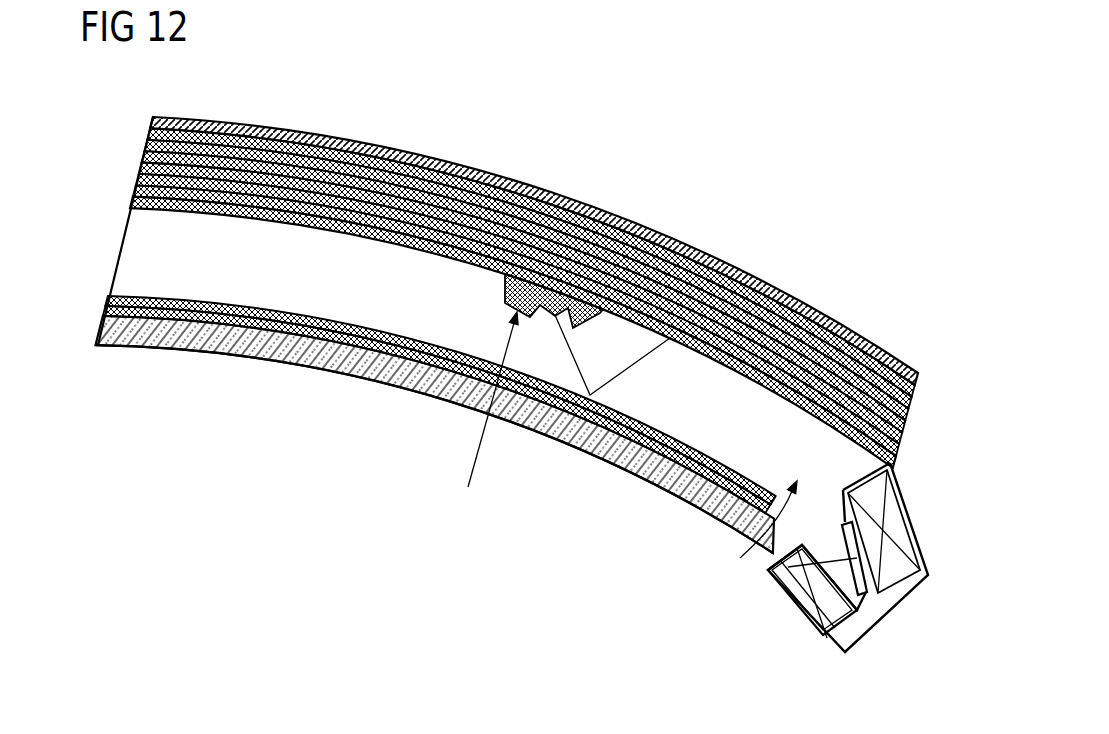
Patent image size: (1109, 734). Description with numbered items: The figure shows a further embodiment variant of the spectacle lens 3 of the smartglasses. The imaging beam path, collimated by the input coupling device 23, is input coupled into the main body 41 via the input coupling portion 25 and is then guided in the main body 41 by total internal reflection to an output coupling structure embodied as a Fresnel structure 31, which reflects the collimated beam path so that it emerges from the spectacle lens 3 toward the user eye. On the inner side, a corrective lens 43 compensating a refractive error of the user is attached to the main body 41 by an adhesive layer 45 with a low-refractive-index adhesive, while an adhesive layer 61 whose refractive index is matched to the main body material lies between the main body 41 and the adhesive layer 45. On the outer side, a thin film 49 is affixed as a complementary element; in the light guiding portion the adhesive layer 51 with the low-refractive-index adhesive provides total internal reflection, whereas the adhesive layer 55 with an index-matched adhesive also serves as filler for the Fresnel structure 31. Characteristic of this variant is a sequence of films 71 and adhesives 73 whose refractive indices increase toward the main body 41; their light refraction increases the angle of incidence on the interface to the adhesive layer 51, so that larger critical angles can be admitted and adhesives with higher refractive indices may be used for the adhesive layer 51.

The spectacle lens 3 is at (500, 305).
The input coupling device 23 is at (926, 497).
The input coupling portion 25 is at (762, 539).
The Fresnel structure 31 is at (467, 393).
The main body 41 is at (153, 247).
The corrective lens 43 is at (150, 335).
The adhesive layer 45 is at (213, 325).
The film 49 is at (885, 352).
The adhesive layer 51 is at (792, 548).
The adhesive layer 55 is at (250, 215).
The adhesive layer 61 is at (347, 362).
The films 71 is at (144, 158).
The adhesives 73 is at (370, 208).